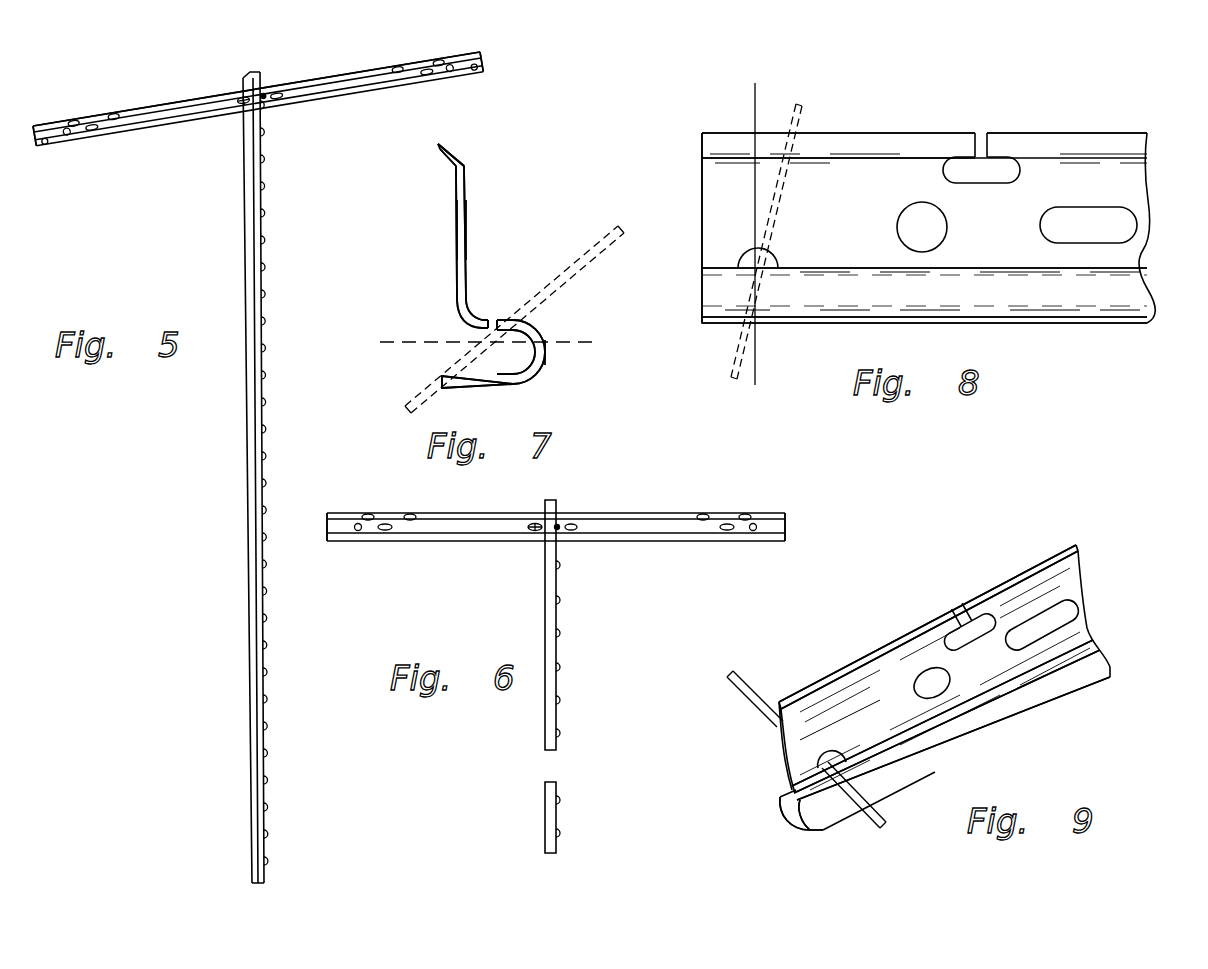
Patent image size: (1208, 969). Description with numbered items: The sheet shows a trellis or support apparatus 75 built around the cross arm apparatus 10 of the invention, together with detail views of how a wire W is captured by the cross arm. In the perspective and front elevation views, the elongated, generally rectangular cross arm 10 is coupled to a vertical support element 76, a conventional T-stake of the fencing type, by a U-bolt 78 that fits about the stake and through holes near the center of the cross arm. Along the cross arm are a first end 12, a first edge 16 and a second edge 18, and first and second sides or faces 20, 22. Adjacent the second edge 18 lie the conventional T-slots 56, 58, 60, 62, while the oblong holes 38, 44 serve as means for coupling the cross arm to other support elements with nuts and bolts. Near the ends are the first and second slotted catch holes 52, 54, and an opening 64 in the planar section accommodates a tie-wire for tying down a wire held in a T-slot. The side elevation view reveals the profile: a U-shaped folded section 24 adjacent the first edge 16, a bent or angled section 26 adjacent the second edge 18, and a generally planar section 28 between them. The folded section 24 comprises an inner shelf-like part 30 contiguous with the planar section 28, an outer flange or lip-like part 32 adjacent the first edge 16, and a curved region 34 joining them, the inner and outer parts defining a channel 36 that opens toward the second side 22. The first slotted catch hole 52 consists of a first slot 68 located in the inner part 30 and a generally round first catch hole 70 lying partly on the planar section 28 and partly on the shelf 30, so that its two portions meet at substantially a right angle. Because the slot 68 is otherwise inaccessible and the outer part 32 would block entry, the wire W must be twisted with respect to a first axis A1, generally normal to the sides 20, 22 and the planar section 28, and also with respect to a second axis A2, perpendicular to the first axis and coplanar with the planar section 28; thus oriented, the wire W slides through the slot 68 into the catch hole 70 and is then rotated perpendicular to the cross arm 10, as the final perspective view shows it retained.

In FIG. 5, the cross arm apparatus 10 is at (306, 90).
In FIG. 6, the cross arm apparatus 10 is at (597, 541).
In FIG. 7, the first end 12 is at (491, 266).
In FIG. 8, the first end 12 is at (928, 228).
In FIG. 9, the first end 12 is at (944, 687).
In FIG. 7, the first edge 16 is at (436, 388).
In FIG. 5, the second edge 18 is at (182, 98).
In FIG. 7, the second edge 18 is at (440, 143).
In FIG. 8, the second edge 18 is at (1066, 133).
In FIG. 9, the second edge 18 is at (1040, 562).
In FIG. 7, the first side 20 is at (467, 228).
In FIG. 7, the second side 22 is at (456, 230).
In FIG. 7, the folded section 24 is at (538, 326).
In FIG. 8, the folded section 24 is at (1030, 300).
In FIG. 9, the folded section 24 is at (1048, 688).
In FIG. 7, the angled section 26 is at (455, 152).
In FIG. 8, the angled section 26 is at (856, 150).
In FIG. 9, the angled section 26 is at (920, 635).
In FIG. 7, the planar section 28 is at (470, 210).
In FIG. 8, the planar section 28 is at (1080, 188).
In FIG. 9, the planar section 28 is at (880, 700).
In FIG. 7, the inner part 30 is at (474, 314).
In FIG. 8, the inner part 30 is at (888, 262).
In FIG. 9, the inner part 30 is at (892, 740).
In FIG. 7, the outer part 32 is at (490, 388).
In FIG. 8, the outer part 32 is at (720, 324).
In FIG. 9, the outer part 32 is at (785, 805).
In FIG. 7, the curved region 34 is at (546, 352).
In FIG. 8, the curved region 34 is at (815, 305).
In FIG. 9, the curved region 34 is at (1020, 712).
In FIG. 7, the channel 36 is at (506, 360).
In FIG. 8, the channel 36 is at (787, 323).
In FIG. 8, the oblong hole 38 is at (1098, 220).
In FIG. 9, the oblong hole 38 is at (1062, 616).
In FIG. 5, the oblong hole 44 is at (427, 75).
In FIG. 5, the first slotted catch hole 52 is at (36, 146).
In FIG. 6, the first slotted catch hole 52 is at (327, 533).
In FIG. 9, the first slotted catch hole 52 is at (855, 775).
In FIG. 5, the second slotted catch hole 54 is at (483, 66).
In FIG. 6, the second slotted catch hole 54 is at (785, 527).
In FIG. 5, the T-slot 56 is at (74, 119).
In FIG. 8, the T-slot 56 is at (960, 165).
In FIG. 6, the T-slot 56 is at (369, 515).
In FIG. 9, the T-slot 56 is at (982, 614).
In FIG. 5, the T-slot 58 is at (114, 113).
In FIG. 6, the T-slot 58 is at (410, 515).
In FIG. 5, the T-slot 60 is at (398, 66).
In FIG. 6, the T-slot 60 is at (703, 515).
In FIG. 5, the T-slot 62 is at (439, 60).
In FIG. 6, the T-slot 62 is at (745, 515).
In FIG. 8, the opening 64 is at (930, 215).
In FIG. 9, the opening 64 is at (950, 690).
In FIG. 7, the first slot 68 is at (493, 320).
In FIG. 9, the first slot 68 is at (824, 828).
In FIG. 8, the first catch hole 70 is at (740, 262).
In FIG. 9, the first catch hole 70 is at (835, 758).
In FIG. 5, the trellis apparatus 75 is at (208, 182).
In FIG. 6, the trellis apparatus 75 is at (497, 572).
In FIG. 5, the vertical support element 76 is at (262, 240).
In FIG. 6, the vertical support element 76 is at (560, 685).
In FIG. 5, the U-bolt 78 is at (252, 103).
In FIG. 6, the U-bolt 78 is at (557, 525).
In FIG. 7, the wire W is at (592, 238).
In FIG. 8, the wire W is at (792, 118).
In FIG. 9, the wire W is at (740, 700).
In FIG. 7, the first axis A1 is at (450, 342).
In FIG. 8, the second axis A2 is at (752, 118).